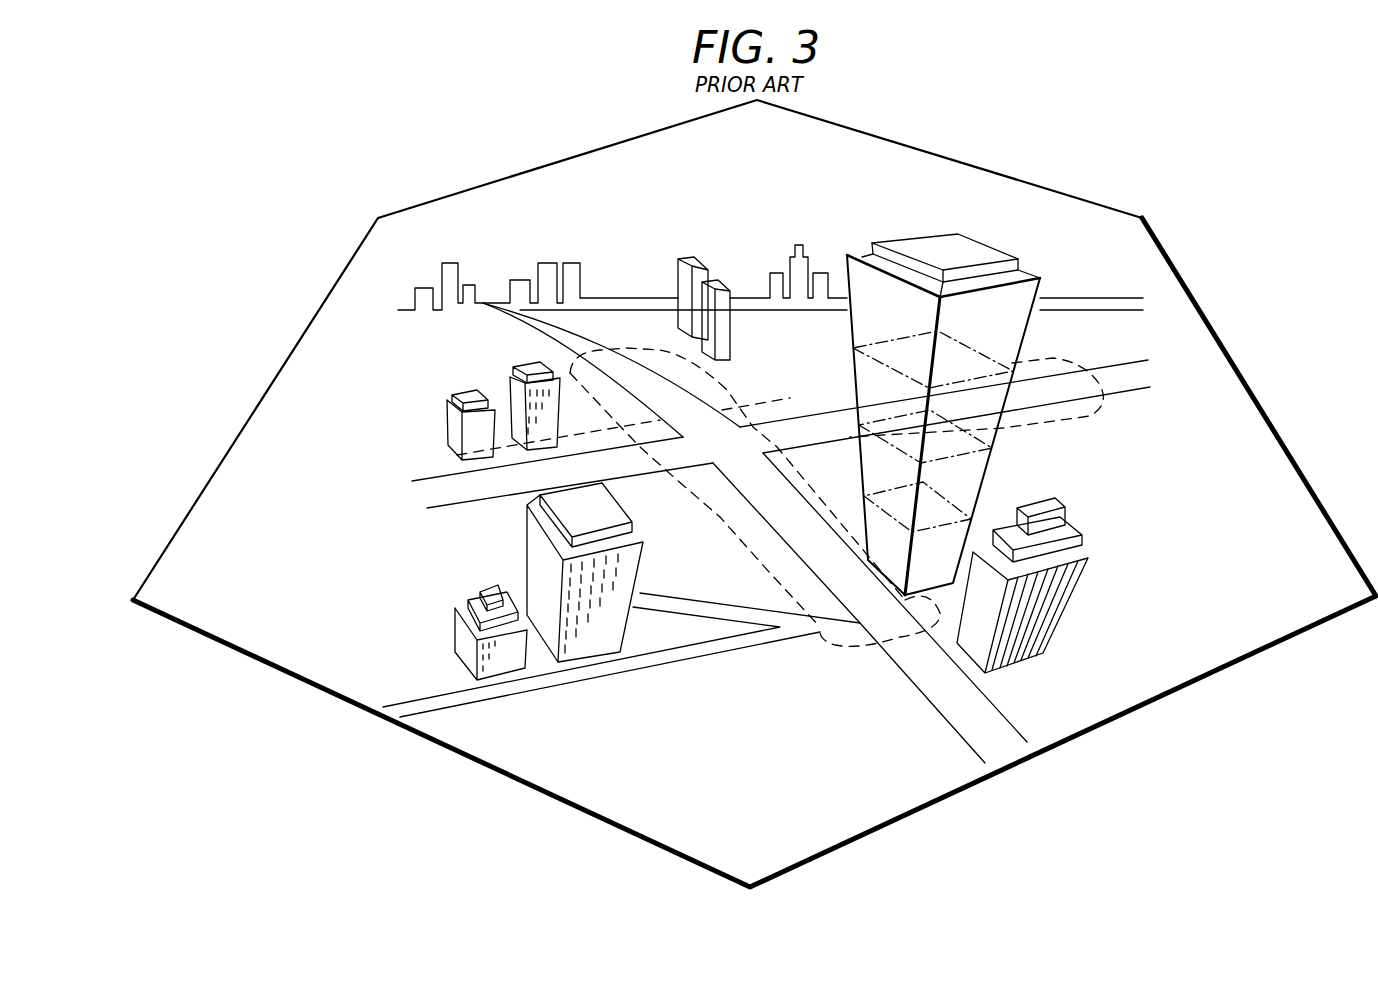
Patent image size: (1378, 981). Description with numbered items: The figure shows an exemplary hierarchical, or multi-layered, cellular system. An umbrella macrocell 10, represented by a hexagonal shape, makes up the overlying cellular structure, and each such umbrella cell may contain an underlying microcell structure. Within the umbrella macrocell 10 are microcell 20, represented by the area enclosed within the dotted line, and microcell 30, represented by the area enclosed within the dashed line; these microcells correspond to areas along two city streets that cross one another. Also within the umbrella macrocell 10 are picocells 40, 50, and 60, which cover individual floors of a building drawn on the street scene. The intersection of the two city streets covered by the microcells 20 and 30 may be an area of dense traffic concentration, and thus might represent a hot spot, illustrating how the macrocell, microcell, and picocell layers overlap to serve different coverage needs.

The umbrella macrocell 10 is at (461, 753).
The microcell 20 is at (638, 352).
The microcell 30 is at (507, 507).
The picocell 40 is at (997, 363).
The picocell 50 is at (982, 448).
The picocell 60 is at (925, 538).